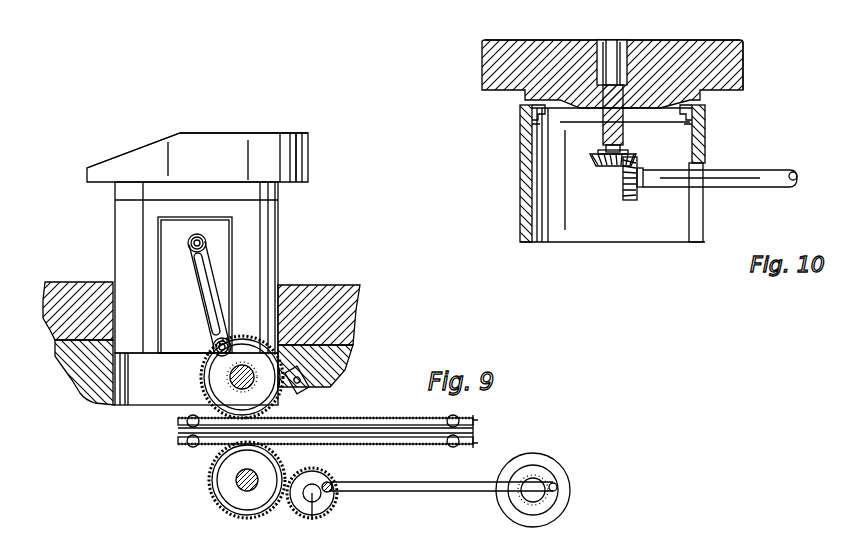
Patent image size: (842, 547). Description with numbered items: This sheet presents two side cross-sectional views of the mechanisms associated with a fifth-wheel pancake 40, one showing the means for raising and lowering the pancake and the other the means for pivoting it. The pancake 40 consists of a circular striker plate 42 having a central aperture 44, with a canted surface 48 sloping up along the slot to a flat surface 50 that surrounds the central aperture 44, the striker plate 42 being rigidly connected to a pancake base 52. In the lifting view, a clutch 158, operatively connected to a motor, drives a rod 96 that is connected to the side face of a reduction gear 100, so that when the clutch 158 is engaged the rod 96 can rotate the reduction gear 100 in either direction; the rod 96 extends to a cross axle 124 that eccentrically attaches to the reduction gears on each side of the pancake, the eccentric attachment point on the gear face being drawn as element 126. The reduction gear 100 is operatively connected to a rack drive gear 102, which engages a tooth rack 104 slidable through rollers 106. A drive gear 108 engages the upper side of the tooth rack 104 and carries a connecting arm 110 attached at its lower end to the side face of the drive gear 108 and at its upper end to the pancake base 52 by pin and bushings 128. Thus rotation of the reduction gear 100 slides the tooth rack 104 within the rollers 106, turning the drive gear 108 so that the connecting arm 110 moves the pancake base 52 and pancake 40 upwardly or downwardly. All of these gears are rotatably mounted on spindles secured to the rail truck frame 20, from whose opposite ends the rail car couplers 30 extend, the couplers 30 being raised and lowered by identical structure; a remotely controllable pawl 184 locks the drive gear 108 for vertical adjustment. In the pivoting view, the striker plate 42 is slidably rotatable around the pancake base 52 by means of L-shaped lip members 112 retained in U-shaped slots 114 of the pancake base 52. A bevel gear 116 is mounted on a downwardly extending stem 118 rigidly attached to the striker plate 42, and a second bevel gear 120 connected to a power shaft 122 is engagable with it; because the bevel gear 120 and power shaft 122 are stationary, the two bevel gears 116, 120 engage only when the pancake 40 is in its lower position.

In FIG. 9, the rail truck frame 20 is at (58, 370).
In FIG. 9, the rail car coupler 30 is at (55, 283).
In FIG. 9, the fifth-wheel pancake 40 is at (330, 130).
In FIG. 10, the fifth-wheel pancake 40 is at (765, 44).
In FIG. 9, the striker plate 42 is at (293, 120).
In FIG. 10, the striker plate 42 is at (720, 34).
In FIG. 10, the central aperture 44 is at (612, 40).
In FIG. 9, the canted surface 48 is at (123, 150).
In FIG. 9, the flat surface 50 is at (180, 133).
In FIG. 10, the flat surface 50 is at (690, 40).
In FIG. 9, the pancake base 52 is at (280, 226).
In FIG. 10, the pancake base 52 is at (518, 190).
In FIG. 9, the rod 96 is at (412, 490).
In FIG. 9, the reduction gear 100 is at (340, 490).
In FIG. 9, the rack drive gear 102 is at (212, 478).
In FIG. 9, the tooth rack 104 is at (462, 426).
In FIG. 9, the rollers 106 is at (462, 447).
In FIG. 9, the drive gear 108 is at (168, 420).
In FIG. 9, the connecting arm 110 is at (200, 272).
In FIG. 10, the lip member 112 is at (534, 106).
In FIG. 10, the U-shaped slot 114 is at (534, 122).
In FIG. 10, the bevel gear 116 is at (606, 168).
In FIG. 10, the stem 118 is at (605, 95).
In FIG. 10, the bevel gear 120 is at (636, 190).
In FIG. 10, the power shaft 122 is at (713, 160).
In FIG. 9, the cross axle 124 is at (312, 512).
In FIG. 9, the crank pin 126 is at (330, 482).
In FIG. 9, the pin and bushings 128 is at (190, 248).
In FIG. 9, the clutch 158 is at (545, 468).
In FIG. 9, the pawl 184 is at (300, 389).